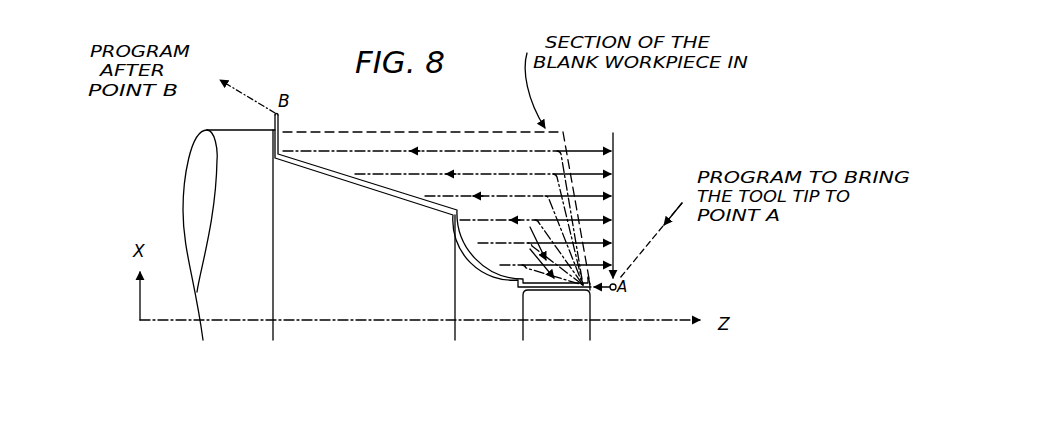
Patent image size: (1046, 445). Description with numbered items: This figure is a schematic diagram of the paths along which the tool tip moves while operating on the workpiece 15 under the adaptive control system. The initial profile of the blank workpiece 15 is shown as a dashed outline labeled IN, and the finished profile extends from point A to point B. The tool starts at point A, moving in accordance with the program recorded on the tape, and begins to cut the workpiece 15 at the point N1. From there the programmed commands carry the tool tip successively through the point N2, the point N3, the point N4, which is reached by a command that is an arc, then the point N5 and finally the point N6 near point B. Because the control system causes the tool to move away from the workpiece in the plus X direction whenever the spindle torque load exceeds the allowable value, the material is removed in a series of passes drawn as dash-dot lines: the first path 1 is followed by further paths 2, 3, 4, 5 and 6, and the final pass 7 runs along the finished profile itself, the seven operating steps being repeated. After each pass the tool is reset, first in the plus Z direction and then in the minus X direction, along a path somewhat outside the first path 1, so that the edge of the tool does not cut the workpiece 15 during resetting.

The workpiece 15 is at (377, 313).
The first path 1 is at (433, 218).
The second roughing pass 2 is at (469, 229).
The third roughing pass 3 is at (504, 240).
The fourth roughing pass 4 is at (521, 252).
The fifth roughing pass 5 is at (530, 263).
The sixth roughing pass 6 is at (541, 278).
The finishing pass along workpiece profile 7 is at (433, 201).
The point N1 is at (590, 293).
The point N2 is at (523, 293).
The point N3 is at (519, 283).
The point N4 is at (453, 216).
The point N5 is at (275, 163).
The point N6 is at (272, 134).